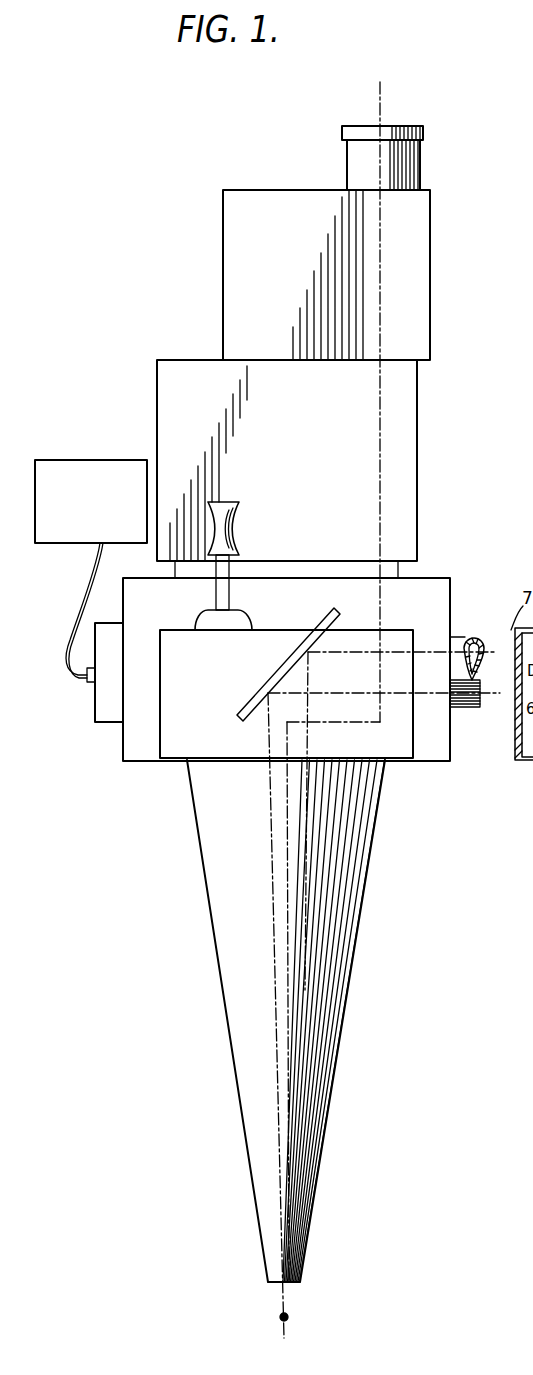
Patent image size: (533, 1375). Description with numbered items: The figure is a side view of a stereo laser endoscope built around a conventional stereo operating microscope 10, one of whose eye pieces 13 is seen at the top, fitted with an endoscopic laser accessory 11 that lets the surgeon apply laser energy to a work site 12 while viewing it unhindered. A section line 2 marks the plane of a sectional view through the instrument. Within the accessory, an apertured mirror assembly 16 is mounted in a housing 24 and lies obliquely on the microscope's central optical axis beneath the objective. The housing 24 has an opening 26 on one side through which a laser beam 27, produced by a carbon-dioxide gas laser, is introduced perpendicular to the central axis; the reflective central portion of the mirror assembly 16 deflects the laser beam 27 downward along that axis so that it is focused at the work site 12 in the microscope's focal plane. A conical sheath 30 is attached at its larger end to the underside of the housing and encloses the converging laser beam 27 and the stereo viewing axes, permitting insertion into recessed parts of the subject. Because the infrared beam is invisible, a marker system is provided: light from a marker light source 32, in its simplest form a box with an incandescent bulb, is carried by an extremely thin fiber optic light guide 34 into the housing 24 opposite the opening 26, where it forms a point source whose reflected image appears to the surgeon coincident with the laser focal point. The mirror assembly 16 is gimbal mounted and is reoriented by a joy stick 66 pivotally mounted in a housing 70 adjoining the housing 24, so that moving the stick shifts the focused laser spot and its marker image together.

The section line 2- 2 is at (405, 100).
The stereo operating microscope 10 is at (219, 272).
The endoscopic laser accessory 11 is at (441, 565).
The work site 12 is at (283, 1317).
The eye piece 13 is at (354, 160).
The apertured mirror assembly 16 is at (246, 706).
The housing 24 is at (122, 743).
The opening 26 is at (474, 641).
The laser beam 27 is at (312, 826).
The conical sheath 30 is at (343, 898).
The marker light source 32 is at (88, 460).
The fiber optic light guide 34 is at (82, 604).
The joy stick 66 is at (240, 532).
The housing 70 is at (176, 630).